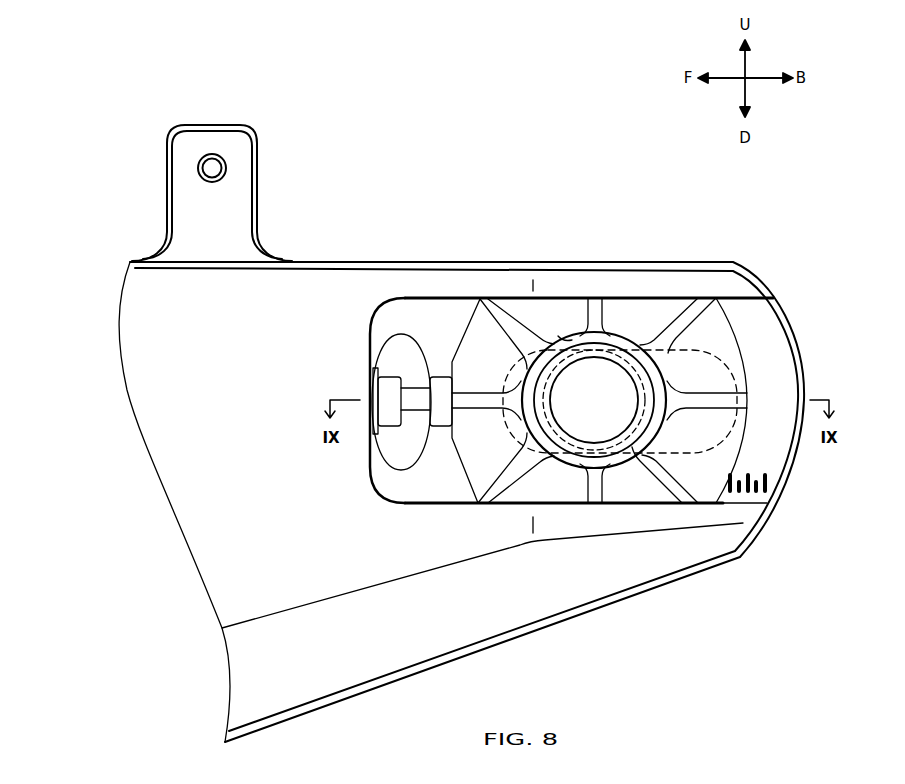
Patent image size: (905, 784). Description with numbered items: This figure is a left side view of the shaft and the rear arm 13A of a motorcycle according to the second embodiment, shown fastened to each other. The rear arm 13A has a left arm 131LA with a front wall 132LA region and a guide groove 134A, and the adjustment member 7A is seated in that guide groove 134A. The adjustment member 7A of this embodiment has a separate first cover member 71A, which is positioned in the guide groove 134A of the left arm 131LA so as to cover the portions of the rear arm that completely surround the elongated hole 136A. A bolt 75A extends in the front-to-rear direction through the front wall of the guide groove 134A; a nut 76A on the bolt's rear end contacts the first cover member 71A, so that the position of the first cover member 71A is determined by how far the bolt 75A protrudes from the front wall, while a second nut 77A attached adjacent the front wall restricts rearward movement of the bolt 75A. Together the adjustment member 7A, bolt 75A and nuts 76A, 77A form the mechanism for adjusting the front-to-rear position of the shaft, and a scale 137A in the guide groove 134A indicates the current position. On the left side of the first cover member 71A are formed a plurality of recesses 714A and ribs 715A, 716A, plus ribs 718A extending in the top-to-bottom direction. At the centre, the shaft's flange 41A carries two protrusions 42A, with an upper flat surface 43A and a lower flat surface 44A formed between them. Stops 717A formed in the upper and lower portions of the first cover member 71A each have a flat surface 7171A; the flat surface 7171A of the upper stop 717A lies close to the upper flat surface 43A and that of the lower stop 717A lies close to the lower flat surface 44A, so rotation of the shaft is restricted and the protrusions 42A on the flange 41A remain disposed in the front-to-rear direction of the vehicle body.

The rear arm 13A is at (337, 246).
The left arm 131LA is at (380, 258).
The front wall 132LA is at (228, 556).
The guide groove 134A is at (393, 504).
The adjustment member 7A is at (753, 318).
The first cover member 71A is at (677, 497).
The bolt 75A is at (415, 396).
The nut 76A is at (443, 423).
The nut 77A is at (390, 423).
The protrusions 42A is at (530, 425).
The upper flat surface 43A is at (520, 312).
The lower flat surface 44A is at (630, 492).
The flange 41A is at (655, 348).
The elongated hole 136A is at (694, 340).
The scale 137A is at (768, 483).
The recesses 714A is at (658, 332).
The ribs 715A is at (488, 308).
The ribs 716A is at (698, 396).
The stops 717A is at (573, 338).
The flat surface 7171A is at (618, 347).
The ribs 718A is at (592, 322).